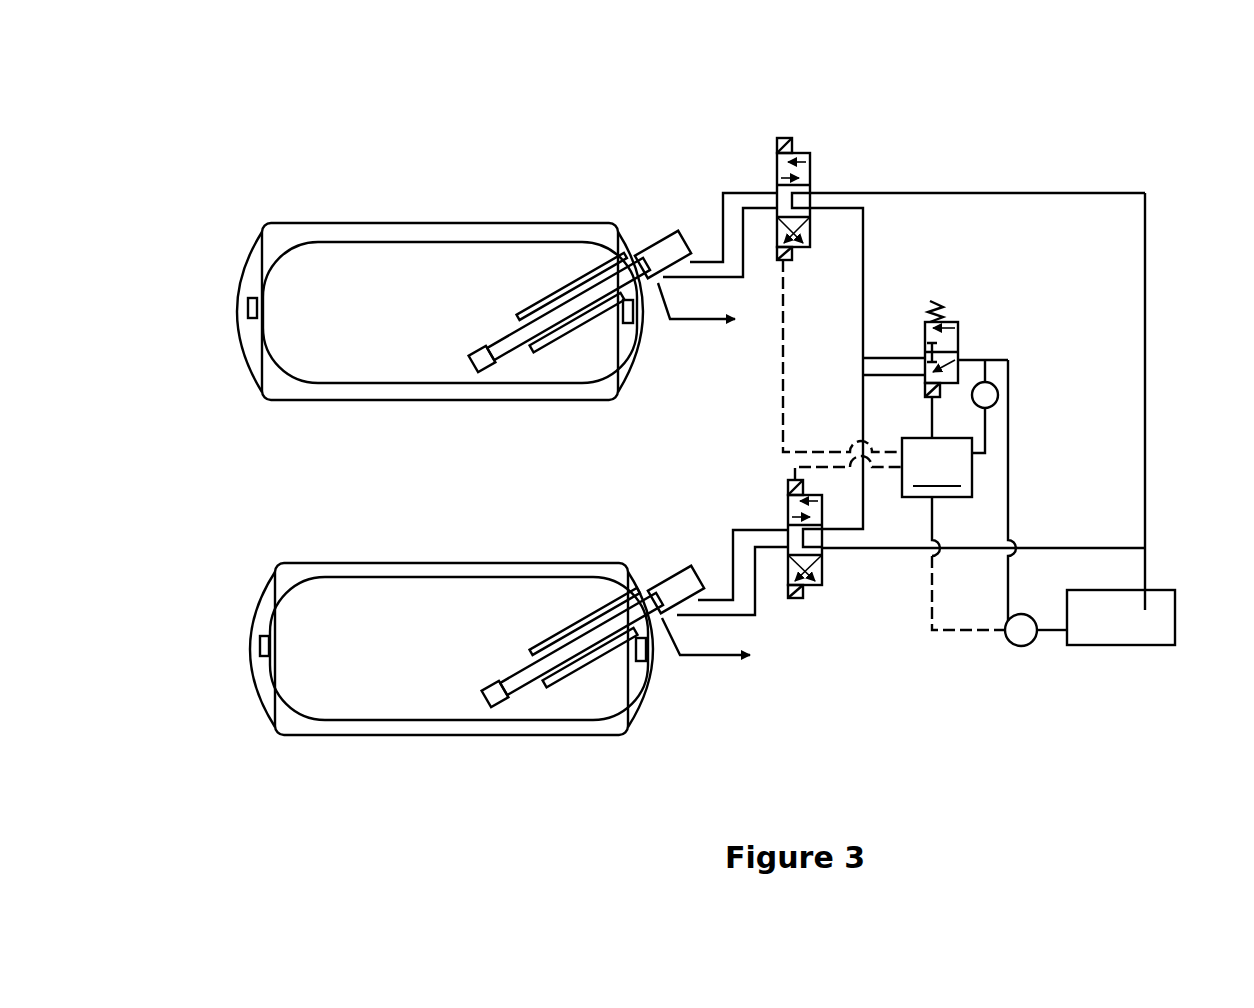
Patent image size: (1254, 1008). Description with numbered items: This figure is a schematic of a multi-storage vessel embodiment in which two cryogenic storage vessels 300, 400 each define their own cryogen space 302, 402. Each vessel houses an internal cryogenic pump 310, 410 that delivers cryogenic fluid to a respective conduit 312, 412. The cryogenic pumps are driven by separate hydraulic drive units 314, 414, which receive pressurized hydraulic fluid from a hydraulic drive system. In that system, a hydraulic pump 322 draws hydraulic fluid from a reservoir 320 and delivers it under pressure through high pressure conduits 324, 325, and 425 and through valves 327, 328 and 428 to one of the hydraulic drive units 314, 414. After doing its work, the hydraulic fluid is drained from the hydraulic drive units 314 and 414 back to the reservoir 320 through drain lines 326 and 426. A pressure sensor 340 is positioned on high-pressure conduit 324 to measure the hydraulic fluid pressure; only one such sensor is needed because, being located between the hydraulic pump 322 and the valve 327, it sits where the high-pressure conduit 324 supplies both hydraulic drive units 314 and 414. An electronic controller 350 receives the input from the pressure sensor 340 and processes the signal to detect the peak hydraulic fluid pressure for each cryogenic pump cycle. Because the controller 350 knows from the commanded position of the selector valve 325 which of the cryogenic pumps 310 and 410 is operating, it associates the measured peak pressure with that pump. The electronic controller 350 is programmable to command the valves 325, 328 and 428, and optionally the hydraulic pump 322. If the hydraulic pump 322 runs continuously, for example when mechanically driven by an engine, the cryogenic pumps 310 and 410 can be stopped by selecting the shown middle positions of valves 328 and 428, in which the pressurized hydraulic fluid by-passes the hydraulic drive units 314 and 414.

The storage vessel 300 is at (398, 735).
The cryogen space 302 is at (391, 668).
The cryogenic pump 310 is at (527, 667).
The conduit 312 is at (737, 660).
The hydraulic drive unit 314 is at (675, 577).
The reservoir 320 is at (1097, 633).
The hydraulic pump 322 is at (1022, 646).
The high pressure conduit 324 is at (1010, 460).
The selector valve 325 is at (877, 377).
The drain line 326 is at (1090, 548).
The valve 327 is at (946, 322).
The valve 328 is at (788, 490).
The pressure sensor 340 is at (993, 382).
The electronic controller 350 is at (937, 467).
The storage vessel 400 is at (392, 398).
The cryogen space 402 is at (380, 331).
The cryogenic pump 410 is at (512, 328).
The conduit 412 is at (727, 323).
The hydraulic drive unit 414 is at (665, 235).
The high pressure conduit 425 is at (870, 192).
The drain line 426 is at (1147, 404).
The valve 428 is at (790, 140).